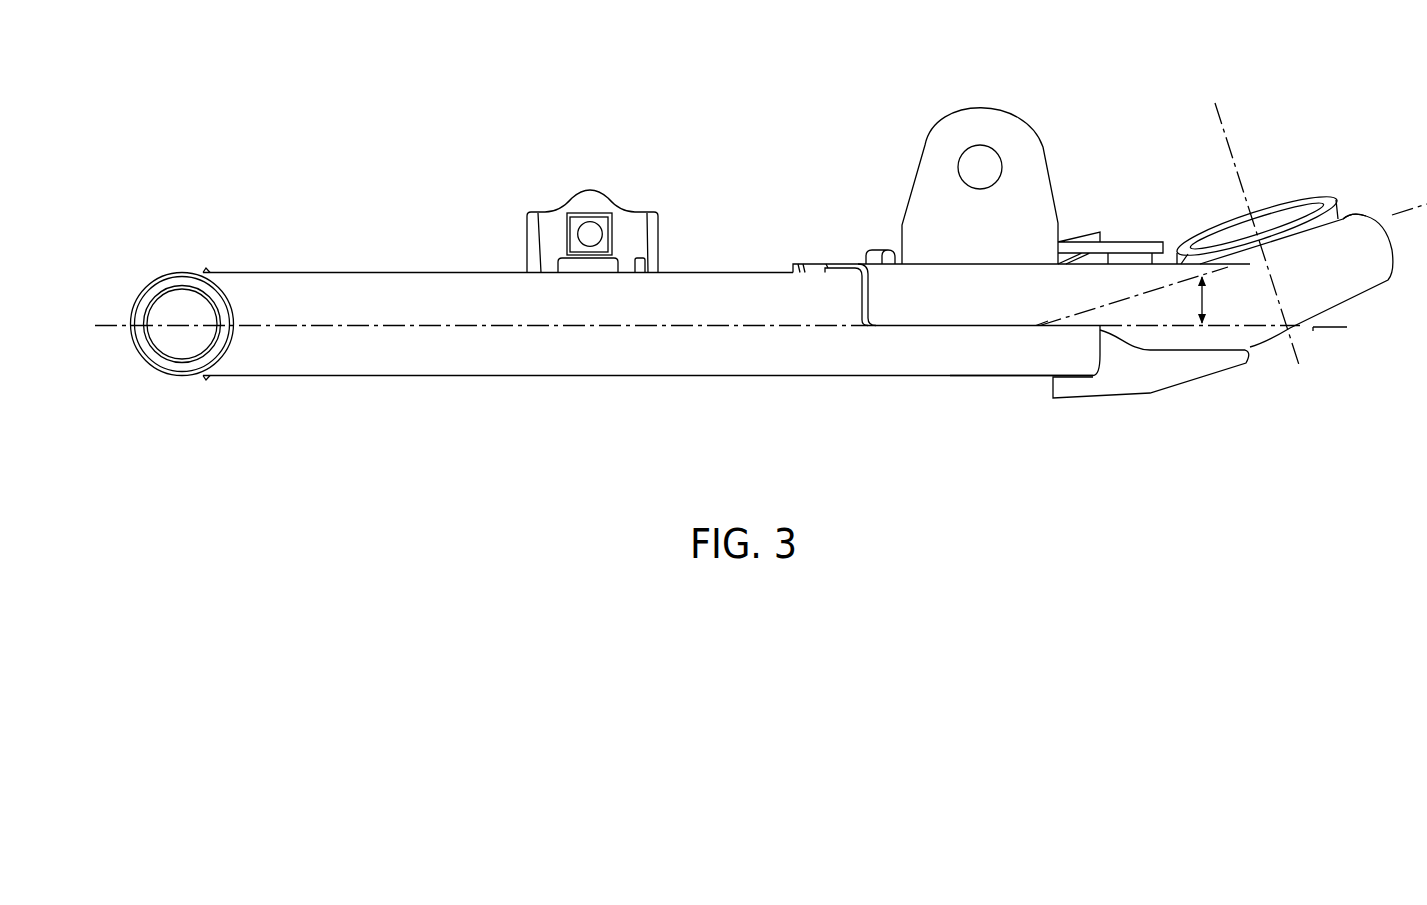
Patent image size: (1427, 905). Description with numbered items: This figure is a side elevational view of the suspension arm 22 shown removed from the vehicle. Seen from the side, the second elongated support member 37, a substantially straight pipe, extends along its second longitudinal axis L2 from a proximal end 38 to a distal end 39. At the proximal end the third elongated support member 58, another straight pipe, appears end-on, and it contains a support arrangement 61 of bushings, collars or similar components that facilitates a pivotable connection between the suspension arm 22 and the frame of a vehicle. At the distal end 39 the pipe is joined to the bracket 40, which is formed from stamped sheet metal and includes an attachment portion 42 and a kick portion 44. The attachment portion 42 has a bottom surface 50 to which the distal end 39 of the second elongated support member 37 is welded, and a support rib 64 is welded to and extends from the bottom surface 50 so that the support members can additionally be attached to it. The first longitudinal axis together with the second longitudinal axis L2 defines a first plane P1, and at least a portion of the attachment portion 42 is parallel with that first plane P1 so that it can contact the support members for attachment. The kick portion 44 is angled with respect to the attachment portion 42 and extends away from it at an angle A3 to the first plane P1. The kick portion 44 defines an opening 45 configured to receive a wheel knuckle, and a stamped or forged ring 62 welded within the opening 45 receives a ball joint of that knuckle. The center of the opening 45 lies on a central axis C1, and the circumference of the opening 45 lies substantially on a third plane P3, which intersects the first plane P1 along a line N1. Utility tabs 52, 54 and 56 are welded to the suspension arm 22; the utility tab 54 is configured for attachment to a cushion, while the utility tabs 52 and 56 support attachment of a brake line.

The suspension arm 22 is at (697, 190).
The second elongated support member 37 is at (648, 381).
The proximal end 38 is at (228, 375).
The distal end 39 is at (1021, 431).
The bracket 40 is at (1054, 235).
The attachment portion 42 is at (985, 377).
The kick portion 44 is at (1307, 303).
The opening 45 is at (1344, 216).
The bottom surface 50 is at (858, 300).
The utility tab 52 is at (592, 177).
The utility tab 54 is at (960, 170).
The utility tab 56 is at (878, 248).
The third elongated support member 58 is at (180, 272).
The support arrangement 61 is at (178, 272).
The ring 62 is at (1308, 225).
The support rib 64 is at (1141, 380).
The line of intersection N1 is at (995, 302).
The angle A3 is at (1208, 303).
The third plane P3 is at (1426, 203).
The central axis C1 is at (1300, 366).
The first plane P1 is at (1330, 331).
The second longitudinal axis L2 is at (1312, 334).